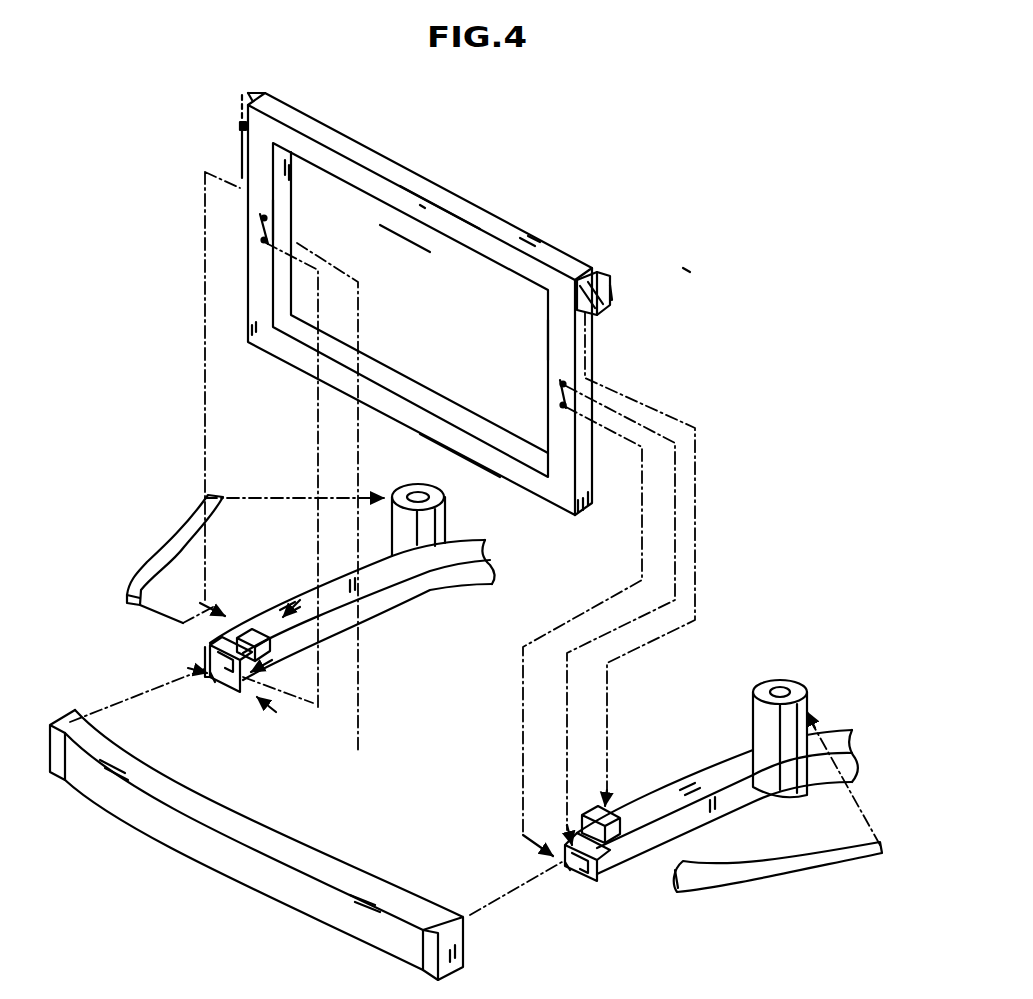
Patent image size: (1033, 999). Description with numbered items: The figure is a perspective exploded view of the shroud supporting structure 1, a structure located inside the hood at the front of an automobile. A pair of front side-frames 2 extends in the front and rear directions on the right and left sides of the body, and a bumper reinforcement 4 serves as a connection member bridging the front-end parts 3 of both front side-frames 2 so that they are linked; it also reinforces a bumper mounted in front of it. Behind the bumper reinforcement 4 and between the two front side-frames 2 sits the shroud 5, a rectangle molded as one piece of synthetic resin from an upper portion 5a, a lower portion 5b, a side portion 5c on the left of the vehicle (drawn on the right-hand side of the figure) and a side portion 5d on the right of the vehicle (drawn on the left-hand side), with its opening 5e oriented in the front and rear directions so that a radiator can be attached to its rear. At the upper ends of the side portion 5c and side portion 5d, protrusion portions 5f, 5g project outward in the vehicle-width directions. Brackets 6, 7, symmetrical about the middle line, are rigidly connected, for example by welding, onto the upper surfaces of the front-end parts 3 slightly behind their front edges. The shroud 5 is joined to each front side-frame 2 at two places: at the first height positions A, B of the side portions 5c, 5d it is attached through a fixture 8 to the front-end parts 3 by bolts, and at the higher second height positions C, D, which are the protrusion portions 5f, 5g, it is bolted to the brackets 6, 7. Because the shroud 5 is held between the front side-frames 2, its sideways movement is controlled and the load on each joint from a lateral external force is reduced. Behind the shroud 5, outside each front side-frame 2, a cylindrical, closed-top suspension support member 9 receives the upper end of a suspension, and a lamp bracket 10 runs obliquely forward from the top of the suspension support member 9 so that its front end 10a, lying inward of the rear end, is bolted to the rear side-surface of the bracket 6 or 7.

The shroud supporting structure 1 is at (683, 268).
The front side-frame 2 is at (407, 600).
The front-end part 3 is at (203, 660).
The bumper reinforcement 4 is at (273, 913).
The shroud 5 is at (462, 192).
The upper portion 5a is at (503, 223).
The lower portion 5b is at (521, 495).
The side portion 5c is at (557, 347).
The side portion 5d is at (287, 216).
The opening 5e is at (405, 235).
The protrusion portion 5f is at (603, 282).
The protrusion portion 5g is at (240, 126).
The bracket 6 is at (618, 816).
The bracket 7 is at (257, 627).
The fixture 8 is at (237, 680).
The suspension support member 9 is at (418, 484).
The lamp bracket 10 is at (148, 562).
The front end 10a is at (130, 588).
The first height position A is at (545, 387).
The first height position B is at (240, 235).
The second height position C is at (616, 292).
The second height position D is at (242, 113).